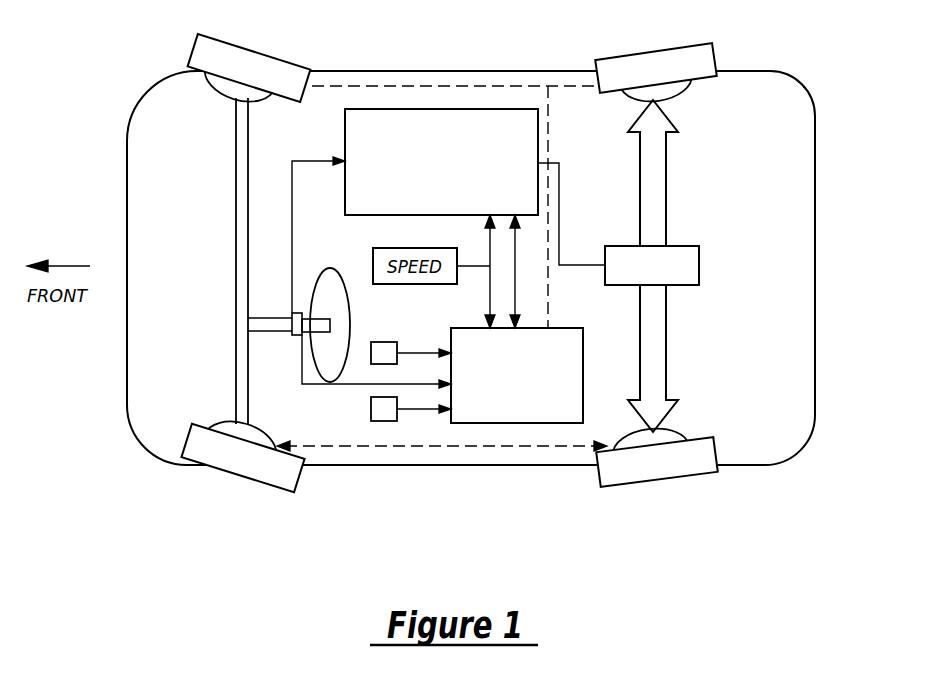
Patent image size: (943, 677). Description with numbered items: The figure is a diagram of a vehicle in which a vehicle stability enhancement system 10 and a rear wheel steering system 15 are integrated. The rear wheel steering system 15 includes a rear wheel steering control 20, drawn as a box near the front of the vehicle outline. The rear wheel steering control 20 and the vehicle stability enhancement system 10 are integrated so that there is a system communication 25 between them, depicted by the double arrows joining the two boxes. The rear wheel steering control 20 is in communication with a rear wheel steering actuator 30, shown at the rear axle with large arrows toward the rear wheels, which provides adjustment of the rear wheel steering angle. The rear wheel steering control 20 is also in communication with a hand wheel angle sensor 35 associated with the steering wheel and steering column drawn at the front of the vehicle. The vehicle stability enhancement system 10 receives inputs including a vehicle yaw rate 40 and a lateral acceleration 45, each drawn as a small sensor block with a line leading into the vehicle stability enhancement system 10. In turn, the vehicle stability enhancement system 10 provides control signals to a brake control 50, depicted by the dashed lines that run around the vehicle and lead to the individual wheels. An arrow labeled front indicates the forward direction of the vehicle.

The vehicle stability enhancement system 10 is at (513, 423).
The rear wheel steering system 15 is at (723, 162).
The rear wheel steering control 20 is at (513, 108).
The system communication 25 is at (535, 283).
The rear wheel steering actuator 30 is at (702, 267).
The hand wheel angle sensor 35 is at (298, 345).
The vehicle yaw rate 40 is at (368, 312).
The lateral acceleration 45 is at (403, 412).
The brake control 50 is at (462, 85).